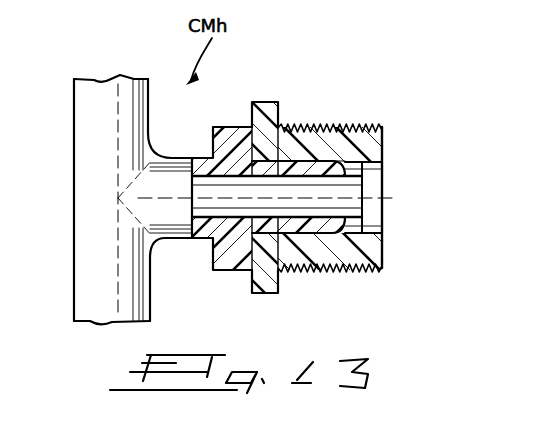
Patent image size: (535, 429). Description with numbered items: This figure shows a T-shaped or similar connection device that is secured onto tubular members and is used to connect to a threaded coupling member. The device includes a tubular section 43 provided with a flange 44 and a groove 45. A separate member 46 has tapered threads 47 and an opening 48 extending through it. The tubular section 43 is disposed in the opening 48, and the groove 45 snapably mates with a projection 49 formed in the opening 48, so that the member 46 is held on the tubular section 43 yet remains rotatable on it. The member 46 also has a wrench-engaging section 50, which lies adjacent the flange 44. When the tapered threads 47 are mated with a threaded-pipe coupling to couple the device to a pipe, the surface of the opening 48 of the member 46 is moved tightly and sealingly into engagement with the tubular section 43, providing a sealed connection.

The tubular section 43 is at (304, 156).
The flange 44 is at (213, 272).
The groove 45 is at (341, 231).
The member 46 is at (346, 134).
The tapered threads 47 is at (366, 252).
The opening 48 is at (380, 181).
The projection 49 is at (343, 234).
The wrench-engaging section 50 is at (268, 272).